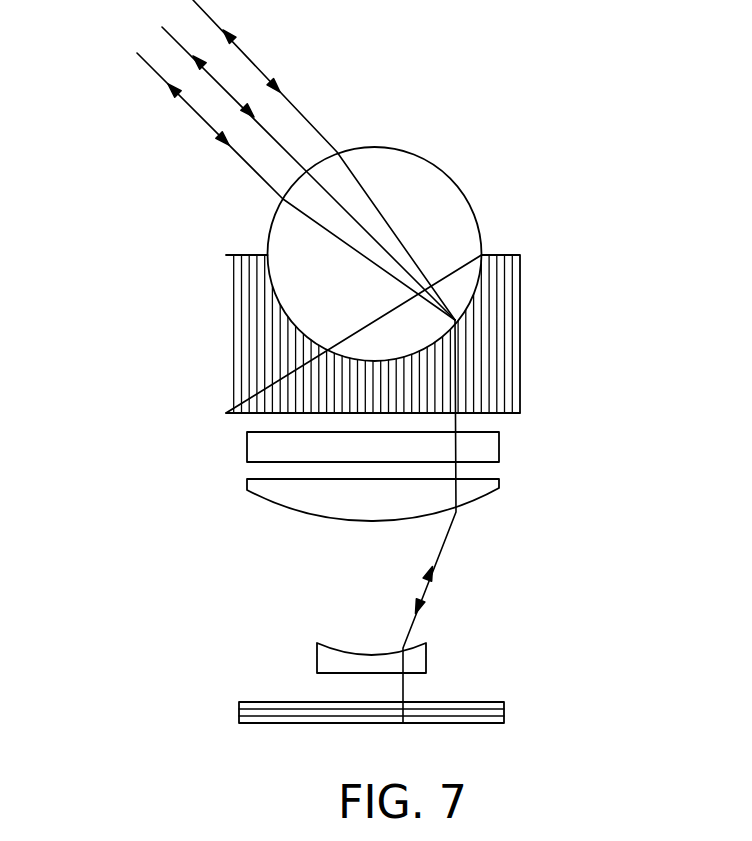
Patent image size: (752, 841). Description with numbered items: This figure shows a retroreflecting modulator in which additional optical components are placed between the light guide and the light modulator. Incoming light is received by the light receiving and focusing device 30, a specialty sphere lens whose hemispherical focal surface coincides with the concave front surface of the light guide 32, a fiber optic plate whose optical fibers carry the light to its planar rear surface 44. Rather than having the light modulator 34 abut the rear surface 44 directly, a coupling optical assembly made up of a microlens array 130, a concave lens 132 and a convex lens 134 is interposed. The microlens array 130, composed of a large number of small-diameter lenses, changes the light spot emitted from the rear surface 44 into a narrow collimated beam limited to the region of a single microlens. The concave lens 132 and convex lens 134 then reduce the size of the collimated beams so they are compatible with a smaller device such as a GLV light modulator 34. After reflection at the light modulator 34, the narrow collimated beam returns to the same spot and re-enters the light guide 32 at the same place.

The light receiving and focusing device 30 is at (445, 165).
The light guide 32 is at (521, 327).
The rear surface 44 is at (251, 413).
The microlens array 130 is at (499, 442).
The concave lens 132 is at (499, 486).
The convex lens 134 is at (426, 655).
The light modulator 34 is at (504, 713).